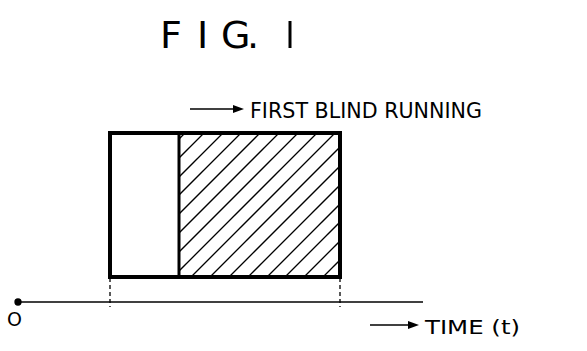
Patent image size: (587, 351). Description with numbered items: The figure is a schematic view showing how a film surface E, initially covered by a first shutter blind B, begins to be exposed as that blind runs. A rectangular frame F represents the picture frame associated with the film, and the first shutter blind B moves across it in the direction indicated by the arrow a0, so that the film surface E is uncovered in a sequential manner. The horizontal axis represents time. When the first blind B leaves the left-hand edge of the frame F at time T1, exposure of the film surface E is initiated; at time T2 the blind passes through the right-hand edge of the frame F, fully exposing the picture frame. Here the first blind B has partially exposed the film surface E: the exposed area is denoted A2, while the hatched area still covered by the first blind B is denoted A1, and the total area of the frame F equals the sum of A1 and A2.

The arrow indicating direction of first blind movement a0 is at (203, 108).
The film surface E is at (114, 168).
The rectangular frame F is at (338, 170).
The first shutter blind B is at (328, 196).
The area still covered by the first blind A1 is at (293, 175).
The exposed area of the film surface A2 is at (155, 205).
The time at which the first blind leaves the left-hand edge T1 is at (109, 304).
The time at which the first blind passes the right-hand edge T2 is at (340, 304).